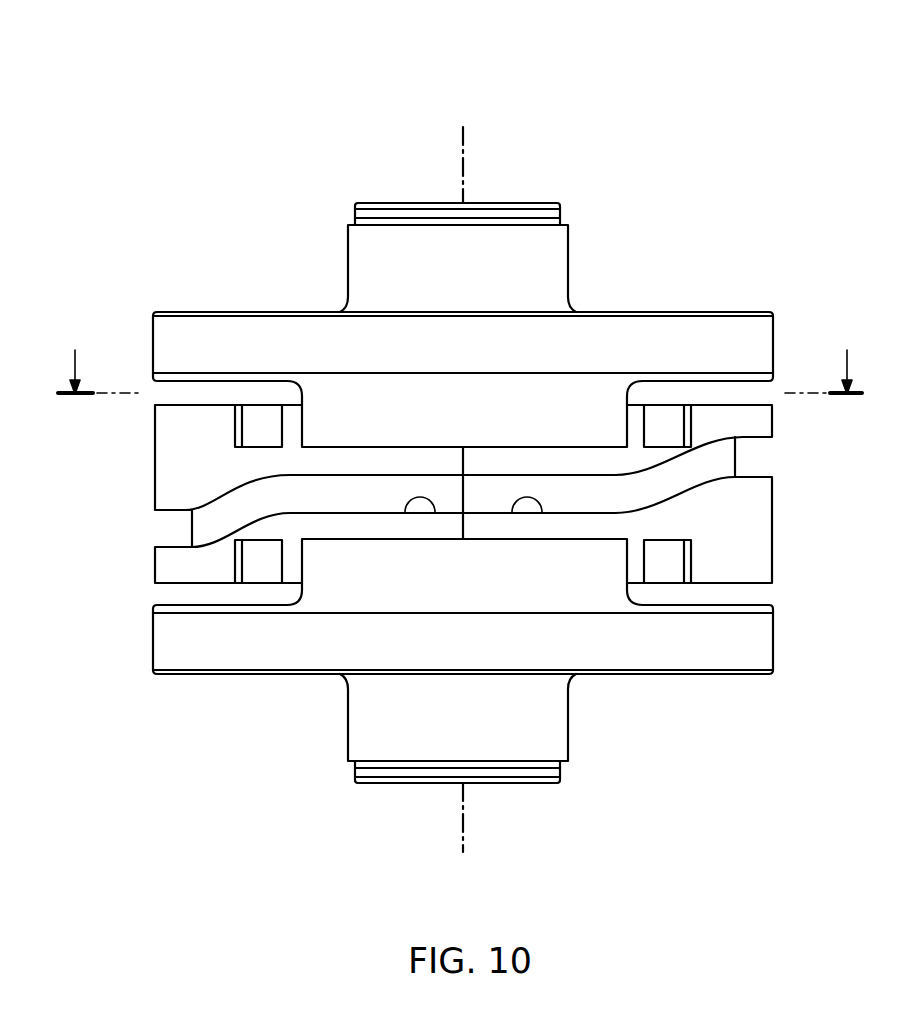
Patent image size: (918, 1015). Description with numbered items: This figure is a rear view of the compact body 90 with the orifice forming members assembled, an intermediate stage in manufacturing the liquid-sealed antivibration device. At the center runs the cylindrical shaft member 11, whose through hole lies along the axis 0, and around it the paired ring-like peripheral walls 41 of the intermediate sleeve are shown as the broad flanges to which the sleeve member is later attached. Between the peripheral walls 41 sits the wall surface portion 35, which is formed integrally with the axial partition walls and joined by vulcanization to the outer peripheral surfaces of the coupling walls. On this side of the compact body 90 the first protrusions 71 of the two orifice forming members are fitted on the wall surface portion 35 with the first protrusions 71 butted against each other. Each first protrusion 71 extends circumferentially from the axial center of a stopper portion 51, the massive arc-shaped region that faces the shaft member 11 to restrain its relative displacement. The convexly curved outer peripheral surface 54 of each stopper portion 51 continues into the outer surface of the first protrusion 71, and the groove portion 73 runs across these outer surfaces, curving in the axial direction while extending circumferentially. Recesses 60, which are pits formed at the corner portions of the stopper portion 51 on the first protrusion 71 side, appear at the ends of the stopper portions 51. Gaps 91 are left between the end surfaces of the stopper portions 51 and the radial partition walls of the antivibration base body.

The compact body 90 is at (742, 122).
The axis 0 is at (466, 140).
The shaft member 11 is at (548, 212).
The wall surface portion 35 is at (451, 390).
The peripheral wall 41 is at (698, 333).
The stopper portion 51 is at (173, 450).
The outer peripheral surface 54 is at (151, 484).
The recess 60 is at (260, 542).
The first protrusion 71 is at (410, 458).
The groove portion 73 is at (405, 512).
The gap 91 is at (748, 593).